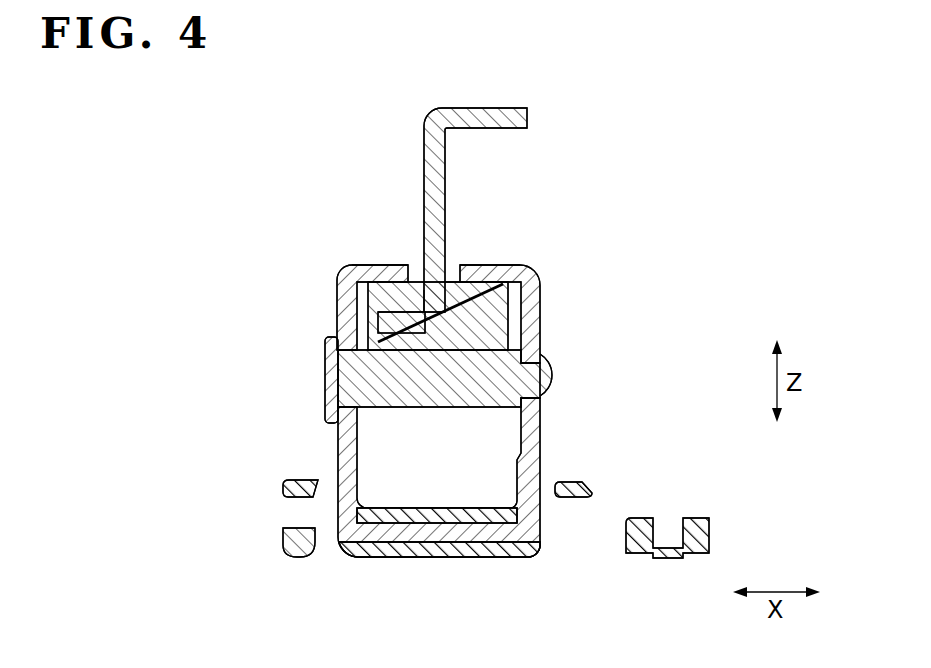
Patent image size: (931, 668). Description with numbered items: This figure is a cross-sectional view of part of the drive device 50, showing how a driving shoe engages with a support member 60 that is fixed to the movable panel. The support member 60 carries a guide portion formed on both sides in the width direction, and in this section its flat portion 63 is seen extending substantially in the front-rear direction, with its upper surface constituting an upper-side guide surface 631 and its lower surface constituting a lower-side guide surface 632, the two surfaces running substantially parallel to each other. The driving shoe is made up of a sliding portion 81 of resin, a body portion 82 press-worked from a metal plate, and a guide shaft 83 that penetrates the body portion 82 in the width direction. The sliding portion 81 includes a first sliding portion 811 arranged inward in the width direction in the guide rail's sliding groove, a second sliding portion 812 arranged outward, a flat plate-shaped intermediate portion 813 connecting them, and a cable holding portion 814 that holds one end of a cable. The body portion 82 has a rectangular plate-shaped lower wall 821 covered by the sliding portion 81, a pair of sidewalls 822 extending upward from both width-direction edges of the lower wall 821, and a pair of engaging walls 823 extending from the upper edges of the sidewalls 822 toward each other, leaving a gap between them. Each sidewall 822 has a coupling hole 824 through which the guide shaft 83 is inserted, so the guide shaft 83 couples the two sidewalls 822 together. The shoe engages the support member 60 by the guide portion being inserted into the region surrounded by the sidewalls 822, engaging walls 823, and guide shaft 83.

The drive device 50 is at (177, 170).
The support member 60 is at (419, 156).
The flat portion 63 is at (508, 318).
The upper-side guide surface 631 is at (485, 263).
The lower-side guide surface 632 is at (466, 358).
The sliding portion 81 is at (405, 566).
The first sliding portion 811 is at (283, 484).
The second sliding portion 812 is at (594, 490).
The intermediate portion 813 is at (505, 555).
The cable holding portion 814 is at (712, 523).
The body portion 82 is at (549, 436).
The lower wall 821 is at (440, 545).
The sidewall 822 is at (337, 297).
The engaging wall 823 is at (376, 265).
The coupling hole 824 is at (326, 403).
The guide shaft 83 is at (327, 362).